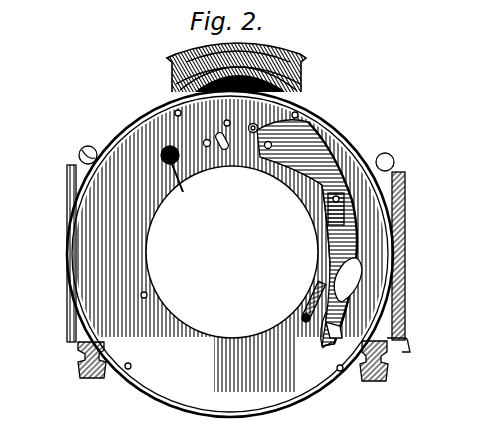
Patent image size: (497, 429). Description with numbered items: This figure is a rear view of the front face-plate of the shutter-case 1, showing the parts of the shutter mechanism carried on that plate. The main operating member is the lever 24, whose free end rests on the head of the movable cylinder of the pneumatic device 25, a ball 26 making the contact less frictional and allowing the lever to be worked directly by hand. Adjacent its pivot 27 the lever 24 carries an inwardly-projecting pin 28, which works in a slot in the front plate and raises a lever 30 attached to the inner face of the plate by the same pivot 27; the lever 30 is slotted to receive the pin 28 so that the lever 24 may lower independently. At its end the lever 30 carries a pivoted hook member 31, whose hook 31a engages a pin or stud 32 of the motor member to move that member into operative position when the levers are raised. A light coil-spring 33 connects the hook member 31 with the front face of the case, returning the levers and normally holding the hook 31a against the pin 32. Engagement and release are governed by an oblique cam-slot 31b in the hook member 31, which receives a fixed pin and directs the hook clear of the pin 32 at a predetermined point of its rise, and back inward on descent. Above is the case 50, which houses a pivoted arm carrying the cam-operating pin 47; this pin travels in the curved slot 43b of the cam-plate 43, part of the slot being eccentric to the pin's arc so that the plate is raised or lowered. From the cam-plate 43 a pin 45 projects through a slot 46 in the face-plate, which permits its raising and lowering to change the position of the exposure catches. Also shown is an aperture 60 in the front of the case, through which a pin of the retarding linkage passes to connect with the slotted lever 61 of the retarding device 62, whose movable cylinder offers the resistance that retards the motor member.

The shutter-case 1 is at (118, 118).
The lever 24 is at (372, 145).
The pneumatic device 25 is at (392, 350).
The ball 26 is at (389, 153).
The pivot 27 is at (271, 156).
The pin 28 is at (316, 181).
The lever 30 is at (324, 226).
The hook member 31 is at (350, 306).
The hook 31a is at (330, 346).
The cam-slot 31b is at (340, 272).
The pin or stud 32 is at (330, 332).
The coil-spring 33 is at (306, 302).
The cam-plate 43 is at (300, 72).
The curved slot 43b is at (198, 60).
The pin 45 is at (251, 117).
The slot 46 is at (230, 128).
The cam-operating pin 47 is at (262, 84).
The case 50 is at (305, 88).
The aperture 60 is at (178, 181).
The lever 61 is at (86, 148).
The retarding device 62 is at (77, 180).